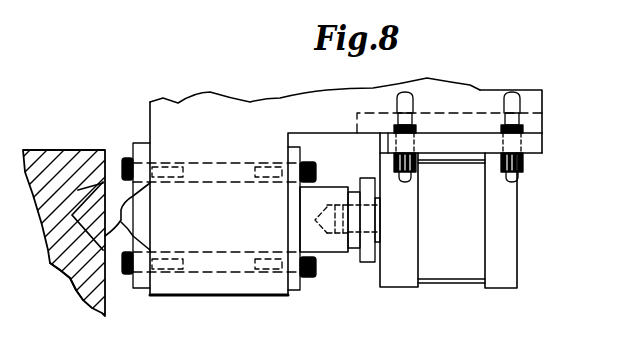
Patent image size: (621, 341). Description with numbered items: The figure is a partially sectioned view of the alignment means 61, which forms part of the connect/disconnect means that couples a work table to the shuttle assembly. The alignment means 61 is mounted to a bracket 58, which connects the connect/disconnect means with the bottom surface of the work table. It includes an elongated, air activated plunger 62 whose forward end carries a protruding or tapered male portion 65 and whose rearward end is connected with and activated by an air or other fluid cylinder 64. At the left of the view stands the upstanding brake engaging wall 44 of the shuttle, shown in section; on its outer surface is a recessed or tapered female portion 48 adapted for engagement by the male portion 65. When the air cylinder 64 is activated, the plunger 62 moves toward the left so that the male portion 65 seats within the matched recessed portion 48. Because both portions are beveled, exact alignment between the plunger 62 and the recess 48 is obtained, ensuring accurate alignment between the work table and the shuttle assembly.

The brake engaging wall 44 is at (53, 155).
The recessed female portion 48 is at (80, 193).
The protruding male portion 65 is at (75, 279).
The alignment means 61 is at (222, 134).
The plunger 62 is at (320, 243).
The bracket 58 is at (483, 95).
The air cylinder 64 is at (468, 255).